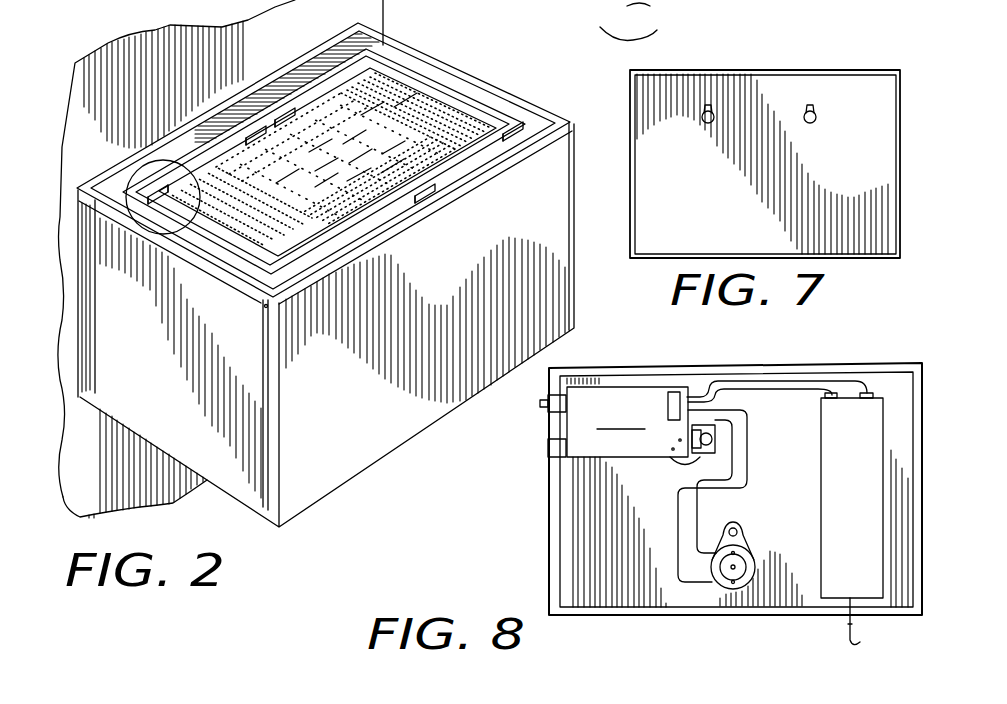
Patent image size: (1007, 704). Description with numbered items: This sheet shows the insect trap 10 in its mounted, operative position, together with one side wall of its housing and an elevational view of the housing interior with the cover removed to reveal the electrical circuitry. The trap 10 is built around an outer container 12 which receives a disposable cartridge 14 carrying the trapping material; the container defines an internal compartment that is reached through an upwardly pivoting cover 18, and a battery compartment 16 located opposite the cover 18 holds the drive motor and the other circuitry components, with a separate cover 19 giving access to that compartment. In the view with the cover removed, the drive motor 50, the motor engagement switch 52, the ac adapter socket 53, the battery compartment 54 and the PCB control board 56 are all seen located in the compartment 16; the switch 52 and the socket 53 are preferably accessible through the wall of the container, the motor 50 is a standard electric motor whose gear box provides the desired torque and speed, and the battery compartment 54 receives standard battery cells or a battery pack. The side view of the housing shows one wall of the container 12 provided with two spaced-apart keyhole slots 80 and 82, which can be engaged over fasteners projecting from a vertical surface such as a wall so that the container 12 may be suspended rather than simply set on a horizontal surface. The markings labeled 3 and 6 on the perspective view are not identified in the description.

In FIG. 2, the section line 3- 3 is at (323, 114).
In FIG. 2, the retaining clip 6 is at (200, 208).
In FIG. 2, the trap 10 is at (151, 118).
In FIG. 2, the outer container 12 is at (372, 45).
In FIG. 7, the outer container 12 is at (873, 152).
In FIG. 2, the cartridge 14 is at (410, 90).
In FIG. 2, the battery compartment 16 is at (258, 102).
In FIG. 8, the battery compartment 16 is at (562, 505).
In FIG. 2, the cover 18 is at (382, 442).
In FIG. 2, the cover 19 is at (78, 305).
In FIG. 8, the drive motor 50 is at (743, 539).
In FIG. 8, the motor engagement switch 52 is at (547, 403).
In FIG. 8, the adapter socket 53 is at (546, 450).
In FIG. 8, the battery compartment 54 is at (818, 428).
In FIG. 8, the PCB control board 56 is at (616, 447).
In FIG. 7, the keyhole slot 80 is at (705, 122).
In FIG. 7, the keyhole slot 82 is at (808, 122).